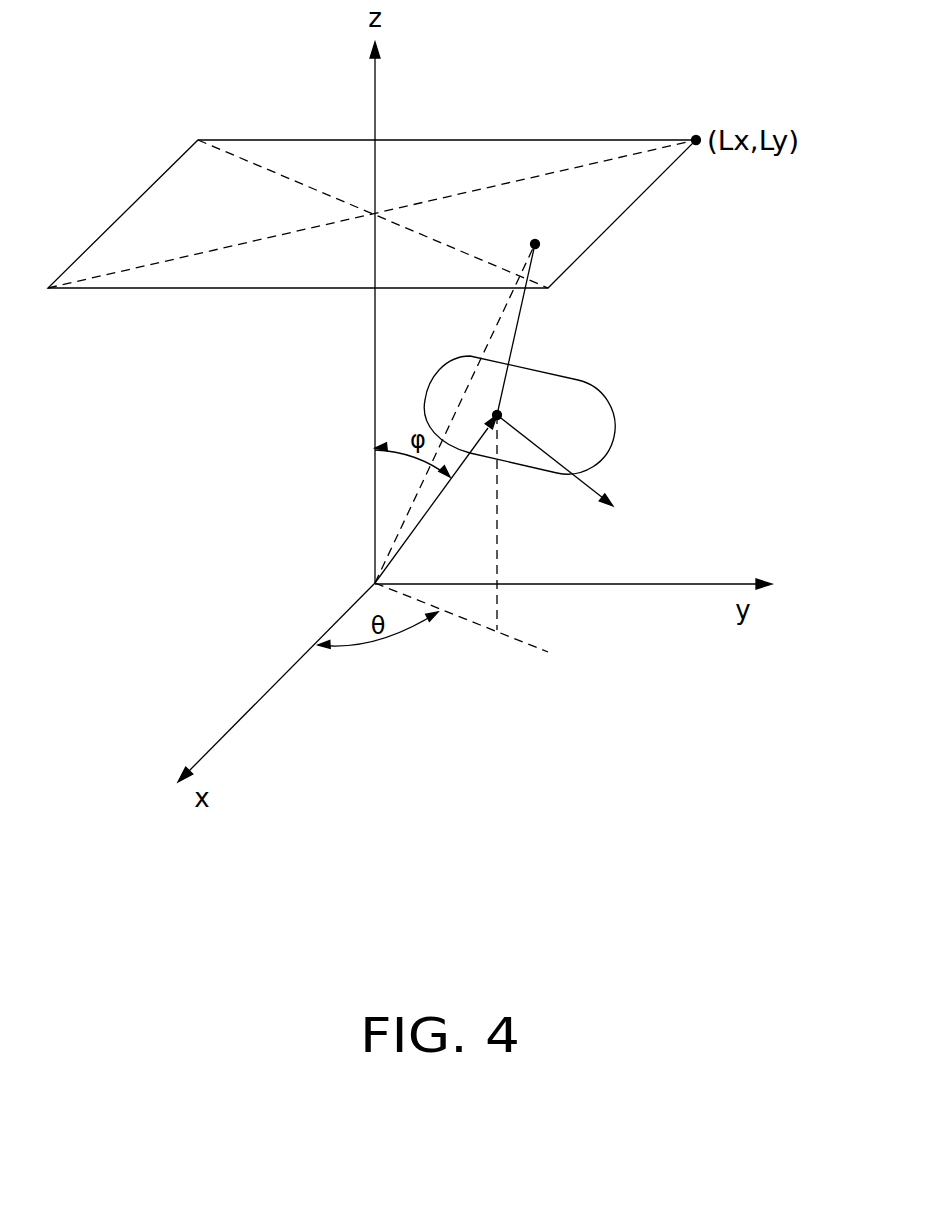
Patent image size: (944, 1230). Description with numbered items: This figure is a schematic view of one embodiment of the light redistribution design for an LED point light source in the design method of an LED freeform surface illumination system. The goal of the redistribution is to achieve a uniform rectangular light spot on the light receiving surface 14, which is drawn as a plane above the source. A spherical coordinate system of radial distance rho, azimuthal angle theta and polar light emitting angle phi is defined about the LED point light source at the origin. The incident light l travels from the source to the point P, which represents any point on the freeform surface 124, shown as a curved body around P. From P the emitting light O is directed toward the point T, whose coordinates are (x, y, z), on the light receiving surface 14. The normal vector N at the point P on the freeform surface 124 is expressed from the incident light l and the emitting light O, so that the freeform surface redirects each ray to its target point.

The light receiving surface 14 is at (453, 153).
The freeform surface 124 is at (570, 422).
The point T is at (538, 226).
The point P is at (497, 415).
The emitting light O is at (520, 320).
The incident light l is at (415, 527).
The normal vector N is at (570, 469).